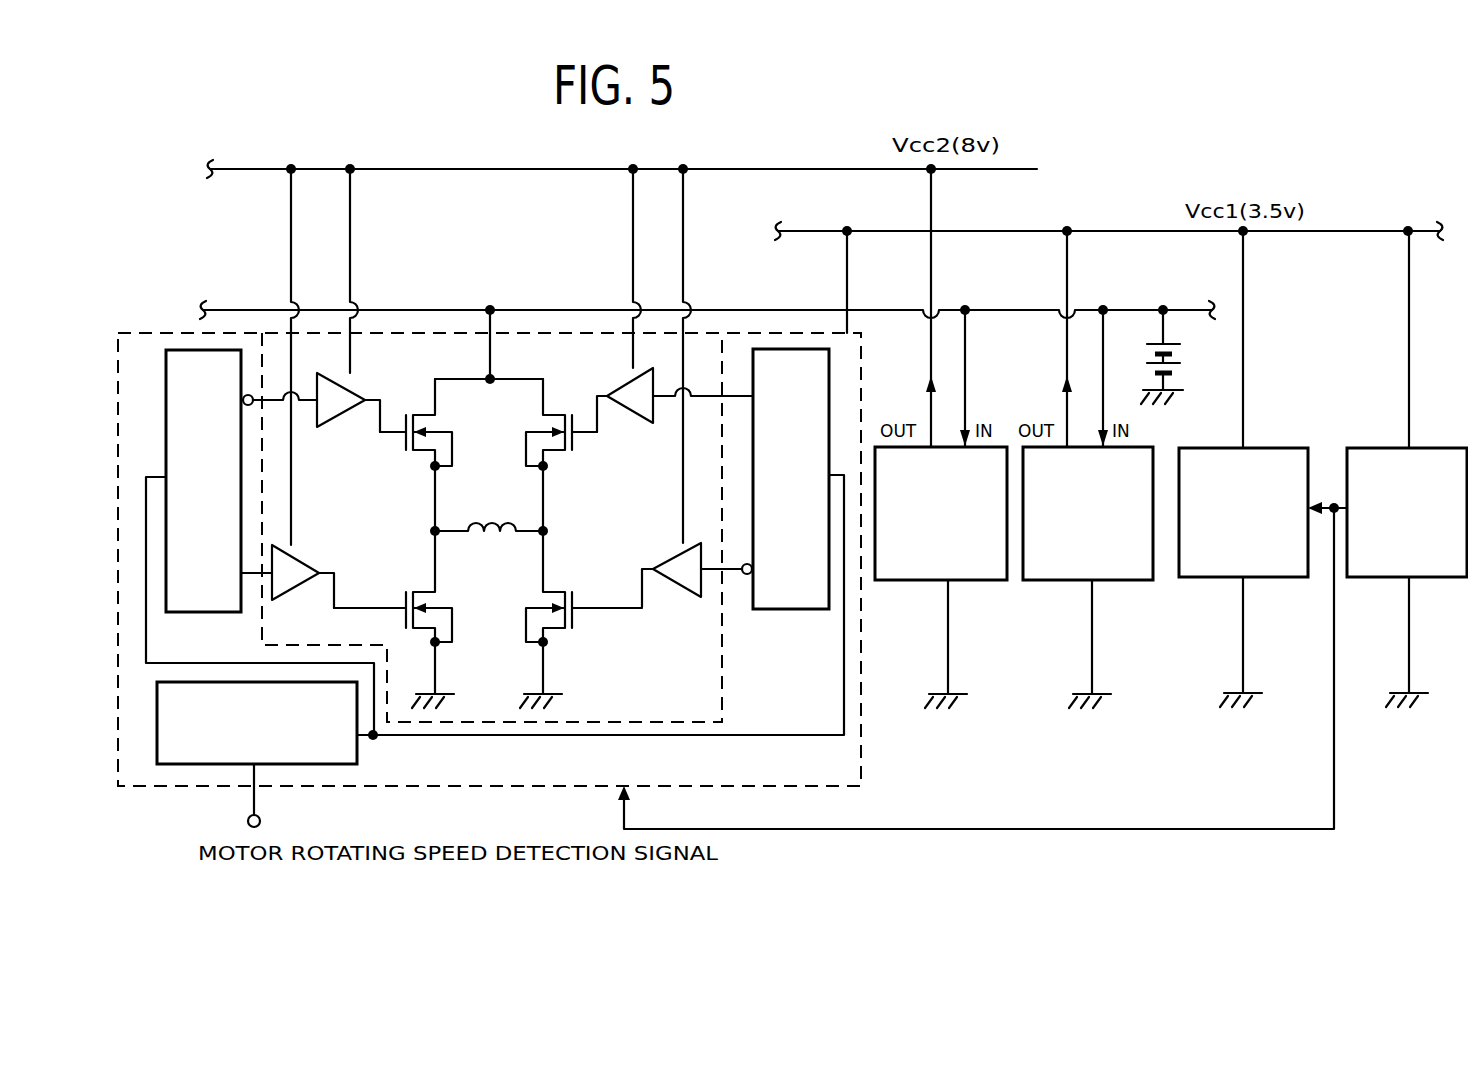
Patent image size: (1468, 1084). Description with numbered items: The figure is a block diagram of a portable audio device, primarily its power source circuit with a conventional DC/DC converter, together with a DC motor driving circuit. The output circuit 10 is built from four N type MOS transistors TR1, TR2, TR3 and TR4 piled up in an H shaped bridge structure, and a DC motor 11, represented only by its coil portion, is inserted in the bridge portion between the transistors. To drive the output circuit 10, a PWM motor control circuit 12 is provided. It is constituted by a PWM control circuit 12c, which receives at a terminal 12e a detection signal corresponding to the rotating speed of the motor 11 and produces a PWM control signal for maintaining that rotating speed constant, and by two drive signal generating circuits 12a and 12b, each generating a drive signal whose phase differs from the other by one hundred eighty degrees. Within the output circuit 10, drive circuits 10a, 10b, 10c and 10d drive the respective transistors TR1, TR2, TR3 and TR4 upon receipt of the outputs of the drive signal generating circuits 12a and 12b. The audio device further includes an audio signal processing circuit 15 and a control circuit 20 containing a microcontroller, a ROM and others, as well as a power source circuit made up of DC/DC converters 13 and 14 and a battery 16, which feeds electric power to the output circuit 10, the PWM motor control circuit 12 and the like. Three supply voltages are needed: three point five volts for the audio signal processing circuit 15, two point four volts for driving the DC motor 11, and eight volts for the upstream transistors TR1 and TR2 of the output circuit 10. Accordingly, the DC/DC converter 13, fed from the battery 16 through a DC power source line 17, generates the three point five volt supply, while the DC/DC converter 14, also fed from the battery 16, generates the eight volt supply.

The output circuit 10 is at (532, 333).
The drive circuit 10a is at (345, 425).
The drive circuit 10b is at (296, 556).
The drive circuit 10c is at (637, 425).
The drive circuit 10d is at (677, 598).
The DC motor 11 is at (492, 545).
The PWM motor control circuit 12 is at (862, 740).
The drive signal generating circuit 12a is at (184, 350).
The drive signal generating circuit 12b is at (782, 610).
The PWM control circuit 12c is at (163, 764).
The terminal 12e is at (261, 819).
The DC/DC converter 13 is at (1125, 580).
The DC/DC converter 14 is at (985, 580).
The audio signal processing circuit 15 is at (1283, 448).
The battery 16 is at (1180, 367).
The DC power source line 17 is at (790, 310).
The control circuit 20 is at (1372, 448).
The N type MOS transistor TR1 is at (402, 383).
The N type MOS transistor TR2 is at (584, 383).
The N type MOS transistor TR3 is at (399, 573).
The N type MOS transistor TR4 is at (579, 573).